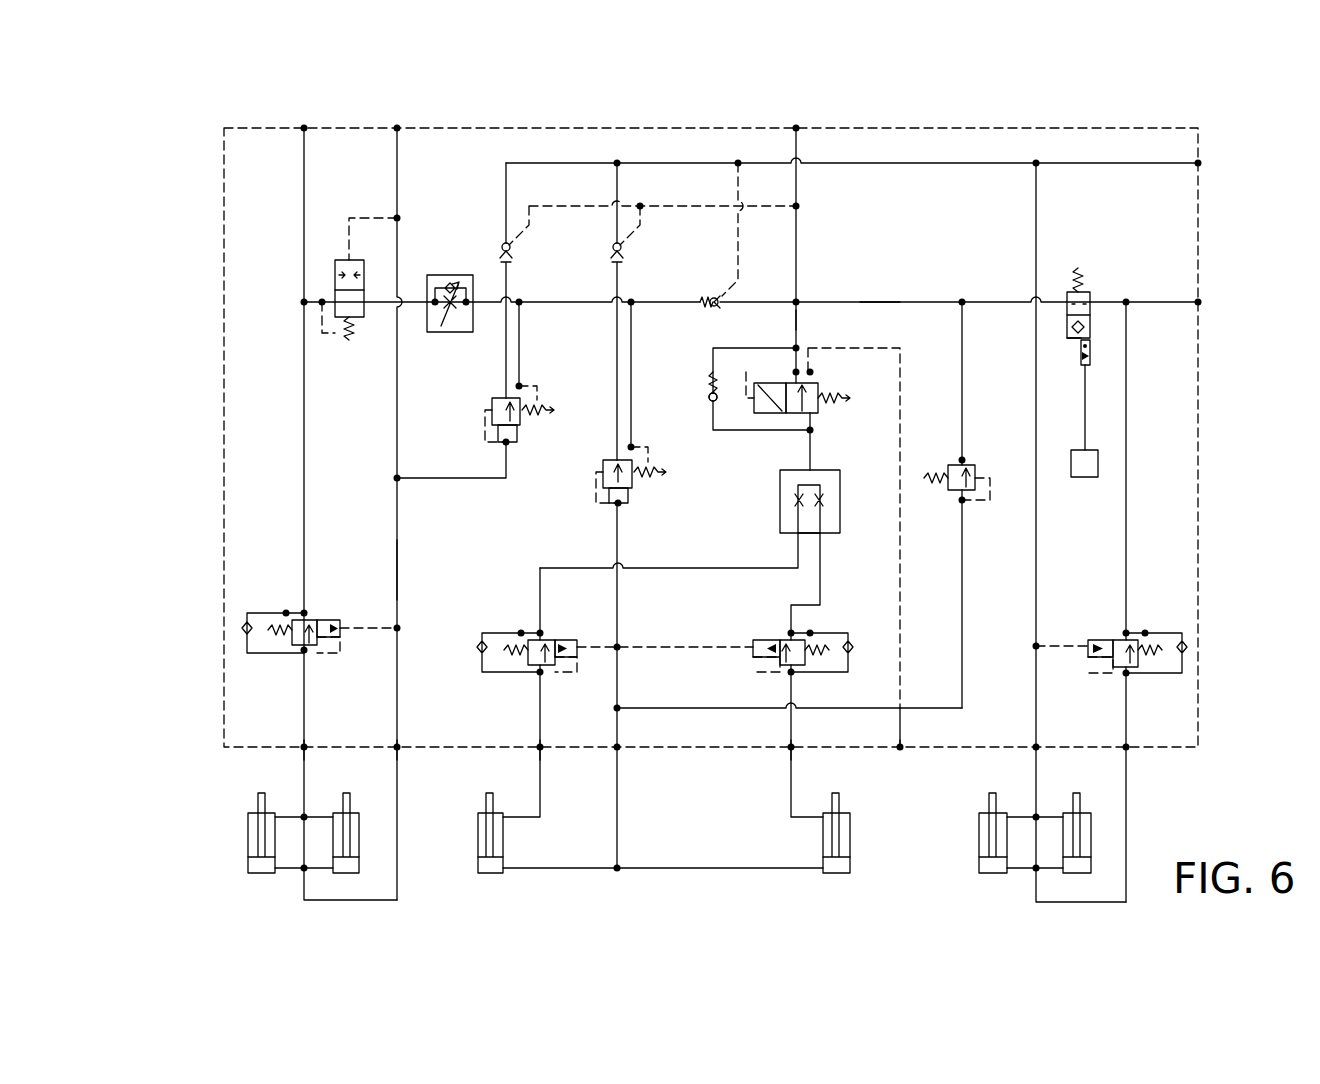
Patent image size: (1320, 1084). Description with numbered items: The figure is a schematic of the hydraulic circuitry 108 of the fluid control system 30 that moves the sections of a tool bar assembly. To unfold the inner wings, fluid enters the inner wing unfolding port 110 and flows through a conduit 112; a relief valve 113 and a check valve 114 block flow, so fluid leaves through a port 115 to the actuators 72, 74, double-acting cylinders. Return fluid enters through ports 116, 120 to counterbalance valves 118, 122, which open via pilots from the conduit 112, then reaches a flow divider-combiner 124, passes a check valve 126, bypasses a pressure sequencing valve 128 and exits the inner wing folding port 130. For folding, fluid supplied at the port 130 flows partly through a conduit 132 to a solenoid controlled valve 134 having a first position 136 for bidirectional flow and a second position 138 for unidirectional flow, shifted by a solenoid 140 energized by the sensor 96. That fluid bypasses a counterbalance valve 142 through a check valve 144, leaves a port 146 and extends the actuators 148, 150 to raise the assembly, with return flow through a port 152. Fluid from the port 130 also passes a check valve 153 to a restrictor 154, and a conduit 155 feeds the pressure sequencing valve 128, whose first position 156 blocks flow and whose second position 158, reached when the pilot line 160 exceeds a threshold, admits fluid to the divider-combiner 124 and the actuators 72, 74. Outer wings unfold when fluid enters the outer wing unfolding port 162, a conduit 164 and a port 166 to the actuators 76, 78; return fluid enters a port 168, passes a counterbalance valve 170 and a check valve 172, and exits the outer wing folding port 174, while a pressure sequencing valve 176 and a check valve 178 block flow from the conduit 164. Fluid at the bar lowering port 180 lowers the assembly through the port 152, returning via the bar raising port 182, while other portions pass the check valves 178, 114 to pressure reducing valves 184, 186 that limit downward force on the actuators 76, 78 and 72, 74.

The fluid control system 30 is at (199, 637).
The actuator 72 is at (838, 874).
The actuator 74 is at (489, 874).
The actuator 76 is at (259, 874).
The actuator 78 is at (342, 874).
The sensor 96 is at (1082, 477).
The circuitry 108 is at (225, 440).
The inner wing unfolding port 110 is at (903, 750).
The conduit 112 is at (655, 708).
The relief valve 113 is at (975, 465).
The check valve 114 is at (624, 250).
The port 115 is at (621, 750).
The port 116 is at (794, 750).
The counterbalance valve 118 is at (798, 634).
The port 120 is at (543, 750).
The counterbalance valve 122 is at (545, 634).
The flow divider-combiner 124 is at (840, 497).
The check valve 126 is at (711, 401).
The pressure sequencing valve 128 is at (826, 380).
The inner wing folding port 130 is at (796, 128).
The conduit 132 is at (875, 302).
The solenoid controlled valve 134 is at (1091, 295).
The first position 136 is at (1065, 300).
The second position 138 is at (1068, 338).
The solenoid 140 is at (1092, 356).
The counterbalance valve 142 is at (1128, 632).
The check valve 144 is at (1186, 645).
The port 146 is at (1129, 750).
The actuator 148 is at (1076, 874).
The actuator 150 is at (992, 874).
The port 152 is at (1039, 750).
The check valve 153 is at (718, 306).
The restrictor 154 is at (457, 332).
The conduit 155 is at (797, 318).
The first position 156 is at (824, 410).
The second position 158 is at (768, 415).
The pilot line 160 is at (784, 381).
The outer wing unfolding port 162 is at (397, 128).
The conduit 164 is at (398, 568).
The port 166 is at (400, 750).
The port 168 is at (307, 750).
The counterbalance valve 170 is at (306, 652).
The check valve 172 is at (245, 624).
The outer wing folding port 174 is at (304, 128).
The pressure sequencing valve 176 is at (364, 275).
The check valve 178 is at (513, 250).
The bar lowering port 180 is at (1198, 163).
The bar raising port 182 is at (1198, 302).
The pressure reducing valve 184 is at (520, 425).
The pressure reducing valve 186 is at (632, 490).